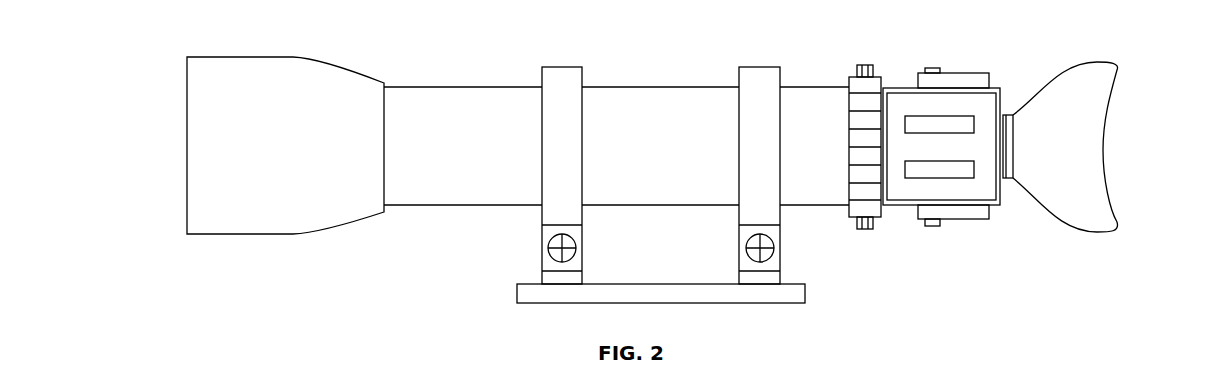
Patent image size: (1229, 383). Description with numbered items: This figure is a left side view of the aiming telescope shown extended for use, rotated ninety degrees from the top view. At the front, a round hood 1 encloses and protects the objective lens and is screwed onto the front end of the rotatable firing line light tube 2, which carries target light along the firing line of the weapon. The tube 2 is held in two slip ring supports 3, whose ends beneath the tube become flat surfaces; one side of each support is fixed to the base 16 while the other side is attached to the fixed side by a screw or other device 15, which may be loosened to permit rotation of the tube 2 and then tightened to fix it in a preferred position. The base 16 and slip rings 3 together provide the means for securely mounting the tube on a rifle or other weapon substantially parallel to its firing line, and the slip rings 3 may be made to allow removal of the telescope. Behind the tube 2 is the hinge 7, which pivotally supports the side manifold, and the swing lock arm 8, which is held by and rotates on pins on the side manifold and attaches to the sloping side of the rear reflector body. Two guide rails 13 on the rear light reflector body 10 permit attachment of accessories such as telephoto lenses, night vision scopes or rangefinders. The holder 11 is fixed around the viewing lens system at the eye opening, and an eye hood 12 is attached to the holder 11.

The round hood 1 is at (260, 230).
The firing line light tube 2 is at (688, 95).
The slip ring supports 3 is at (562, 66).
The hinge 7 is at (879, 77).
The swing lock arm 8 is at (981, 73).
The rear light reflector body 10 is at (910, 197).
The holder 11 is at (1007, 183).
The eye hood 12 is at (1104, 140).
The guide rails 13 is at (958, 134).
The screw 15 is at (735, 240).
The base 16 is at (516, 292).